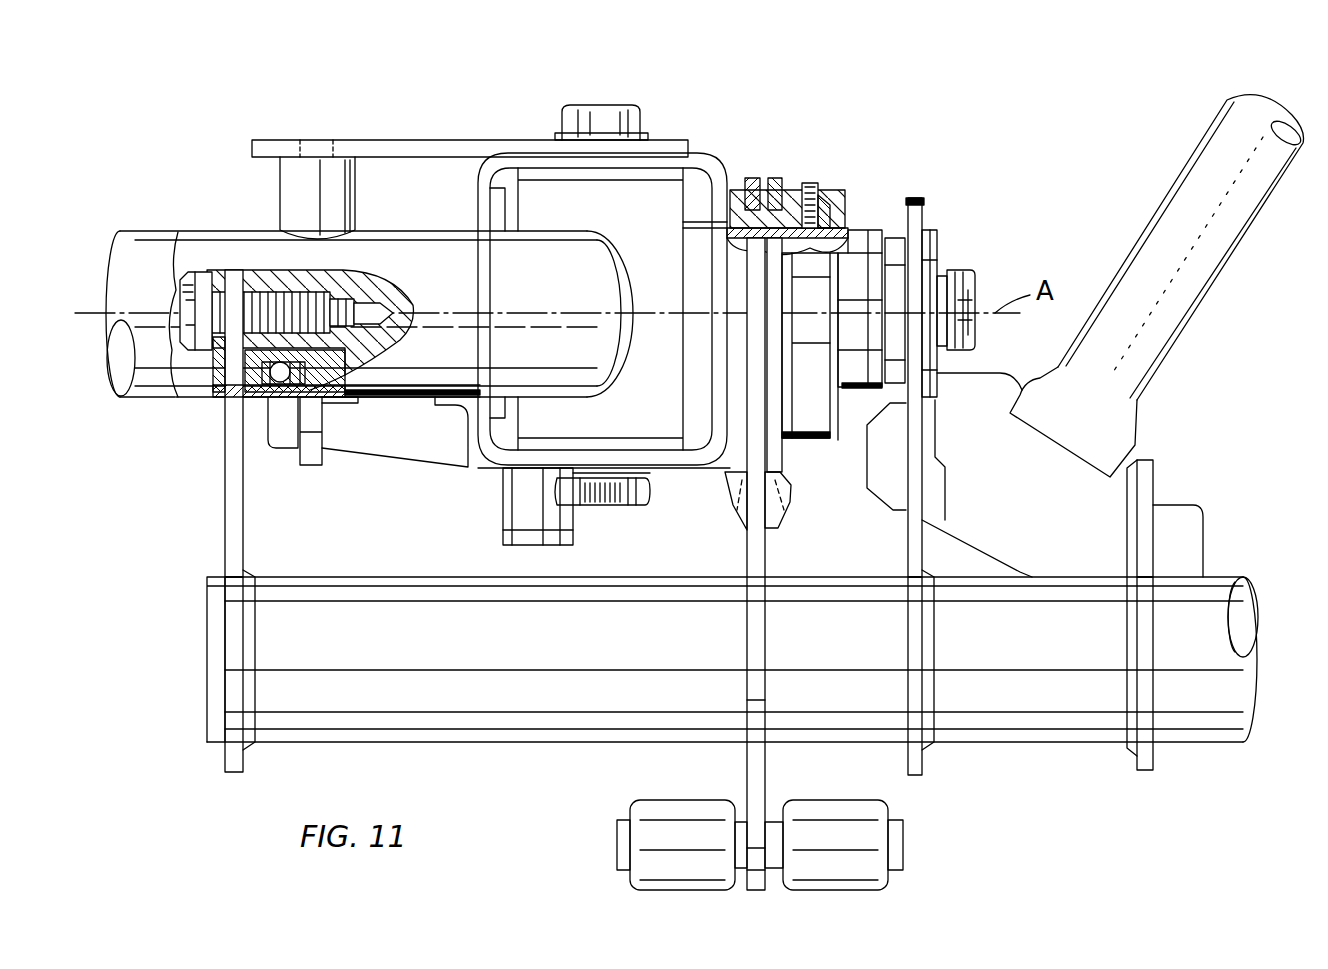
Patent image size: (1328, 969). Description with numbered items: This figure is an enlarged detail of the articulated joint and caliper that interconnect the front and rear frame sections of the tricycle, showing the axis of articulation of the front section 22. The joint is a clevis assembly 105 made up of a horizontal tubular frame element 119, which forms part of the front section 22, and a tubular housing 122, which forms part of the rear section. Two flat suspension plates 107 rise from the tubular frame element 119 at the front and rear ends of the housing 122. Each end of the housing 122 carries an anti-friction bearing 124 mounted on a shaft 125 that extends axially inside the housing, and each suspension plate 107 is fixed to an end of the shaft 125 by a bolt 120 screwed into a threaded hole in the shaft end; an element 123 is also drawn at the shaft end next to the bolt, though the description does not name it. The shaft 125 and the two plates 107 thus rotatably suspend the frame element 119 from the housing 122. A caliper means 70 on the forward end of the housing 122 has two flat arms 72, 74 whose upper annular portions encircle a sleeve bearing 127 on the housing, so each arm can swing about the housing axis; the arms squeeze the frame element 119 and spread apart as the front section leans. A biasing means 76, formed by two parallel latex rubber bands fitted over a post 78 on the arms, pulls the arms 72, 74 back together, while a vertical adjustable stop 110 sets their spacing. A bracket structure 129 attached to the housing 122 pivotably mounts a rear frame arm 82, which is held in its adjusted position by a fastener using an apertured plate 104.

The caliper means 70 is at (912, 120).
The front section 22 is at (1078, 725).
The arm 72 is at (778, 178).
The arm 74 is at (756, 178).
The biasing means 76 is at (642, 876).
The post 78 is at (620, 848).
The frame arm 82 is at (192, 231).
The apertured plate 104 is at (415, 140).
The clevis assembly 105 is at (244, 540).
The suspension plate 107 is at (235, 668).
The vertical adjustable stop 110 is at (785, 512).
The horizontal tubular frame element 119 is at (480, 738).
The bolt 120 is at (165, 355).
The tubular housing 122 is at (284, 397).
The washer 123 is at (937, 245).
The anti-friction bearing 124 is at (365, 380).
The shaft 125 is at (405, 292).
The sleeve bearing 127 is at (830, 200).
The bracket structure 129 is at (715, 160).